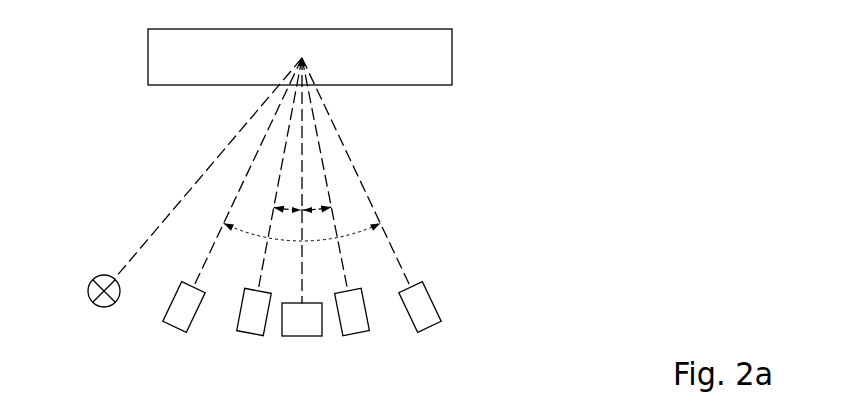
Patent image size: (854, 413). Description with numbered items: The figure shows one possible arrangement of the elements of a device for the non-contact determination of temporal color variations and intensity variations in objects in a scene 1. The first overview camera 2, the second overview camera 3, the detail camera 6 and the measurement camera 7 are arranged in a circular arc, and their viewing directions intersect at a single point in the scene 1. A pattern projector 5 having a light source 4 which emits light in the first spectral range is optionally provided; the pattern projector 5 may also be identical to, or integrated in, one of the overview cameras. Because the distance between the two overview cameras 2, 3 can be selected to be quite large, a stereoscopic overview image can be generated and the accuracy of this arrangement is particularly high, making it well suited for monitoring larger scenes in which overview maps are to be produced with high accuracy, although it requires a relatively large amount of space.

The scene 1 is at (300, 57).
The first overview camera 2 is at (232, 195).
The second overview camera 3 is at (371, 195).
The light source 4 is at (87, 293).
The pattern projector 5 is at (302, 197).
The detail camera 6 is at (269, 197).
The measurement camera 7 is at (335, 197).